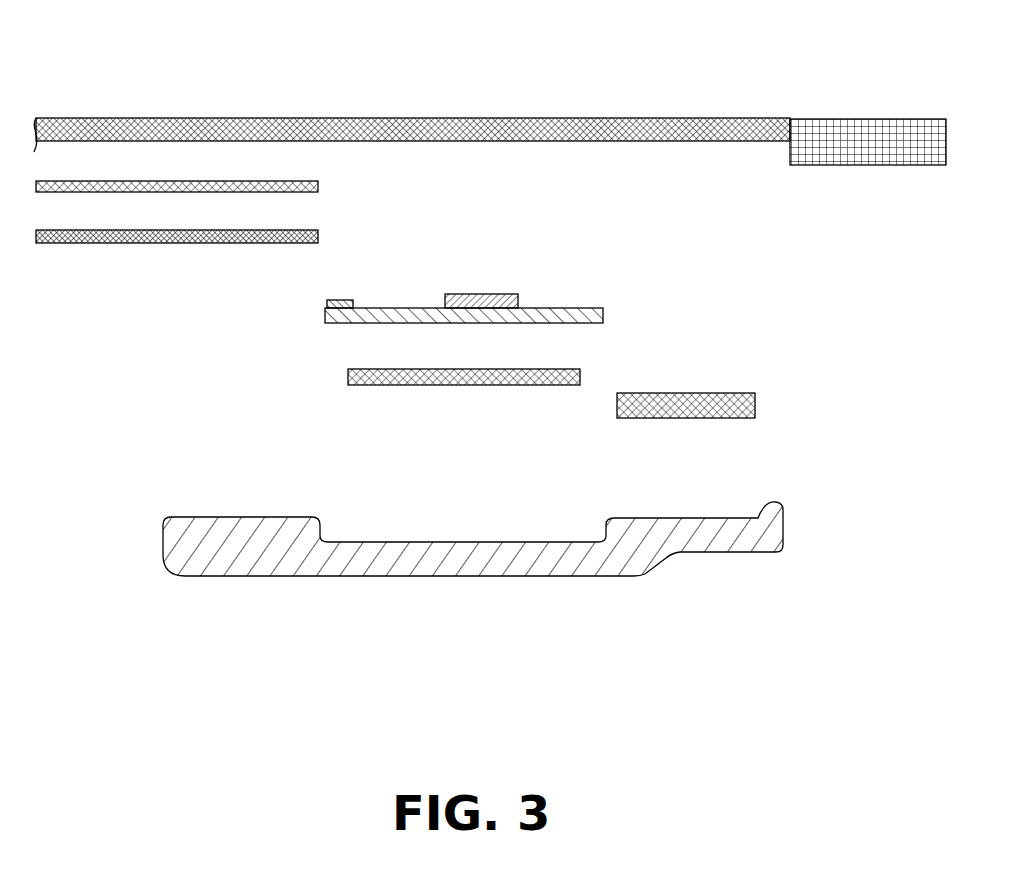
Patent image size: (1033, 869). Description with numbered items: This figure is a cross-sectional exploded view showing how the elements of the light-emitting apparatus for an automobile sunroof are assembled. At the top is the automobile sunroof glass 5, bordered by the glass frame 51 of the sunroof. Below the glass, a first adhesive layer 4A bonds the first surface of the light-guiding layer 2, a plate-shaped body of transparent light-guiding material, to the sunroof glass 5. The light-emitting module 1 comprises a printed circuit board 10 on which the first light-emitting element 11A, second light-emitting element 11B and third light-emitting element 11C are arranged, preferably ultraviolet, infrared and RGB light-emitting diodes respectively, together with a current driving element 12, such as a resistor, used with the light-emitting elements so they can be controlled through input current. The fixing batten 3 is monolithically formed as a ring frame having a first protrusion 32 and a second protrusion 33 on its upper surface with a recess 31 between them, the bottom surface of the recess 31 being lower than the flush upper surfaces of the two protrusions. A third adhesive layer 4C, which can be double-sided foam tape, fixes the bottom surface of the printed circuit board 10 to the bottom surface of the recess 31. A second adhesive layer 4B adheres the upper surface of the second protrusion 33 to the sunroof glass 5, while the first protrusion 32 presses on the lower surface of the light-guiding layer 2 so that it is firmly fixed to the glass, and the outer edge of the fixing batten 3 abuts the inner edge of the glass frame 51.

The light-emitting module 1 is at (398, 288).
The light-guiding layer 2 is at (319, 236).
The fixing batten 3 is at (473, 563).
The first adhesive layer 4A is at (319, 188).
The second adhesive layer 4B is at (748, 408).
The third adhesive layer 4C is at (350, 378).
The automobile sunroof glass 5 is at (397, 132).
The printed circuit board 10 is at (598, 320).
The first light-emitting element 11A is at (215, 294).
The second light-emitting element 11B is at (215, 294).
The third light-emitting element 11C is at (340, 303).
The current driving element 12 is at (488, 296).
The recess 31 is at (456, 542).
The first protrusion 32 is at (232, 523).
The second protrusion 33 is at (690, 520).
The glass frame 51 is at (843, 135).